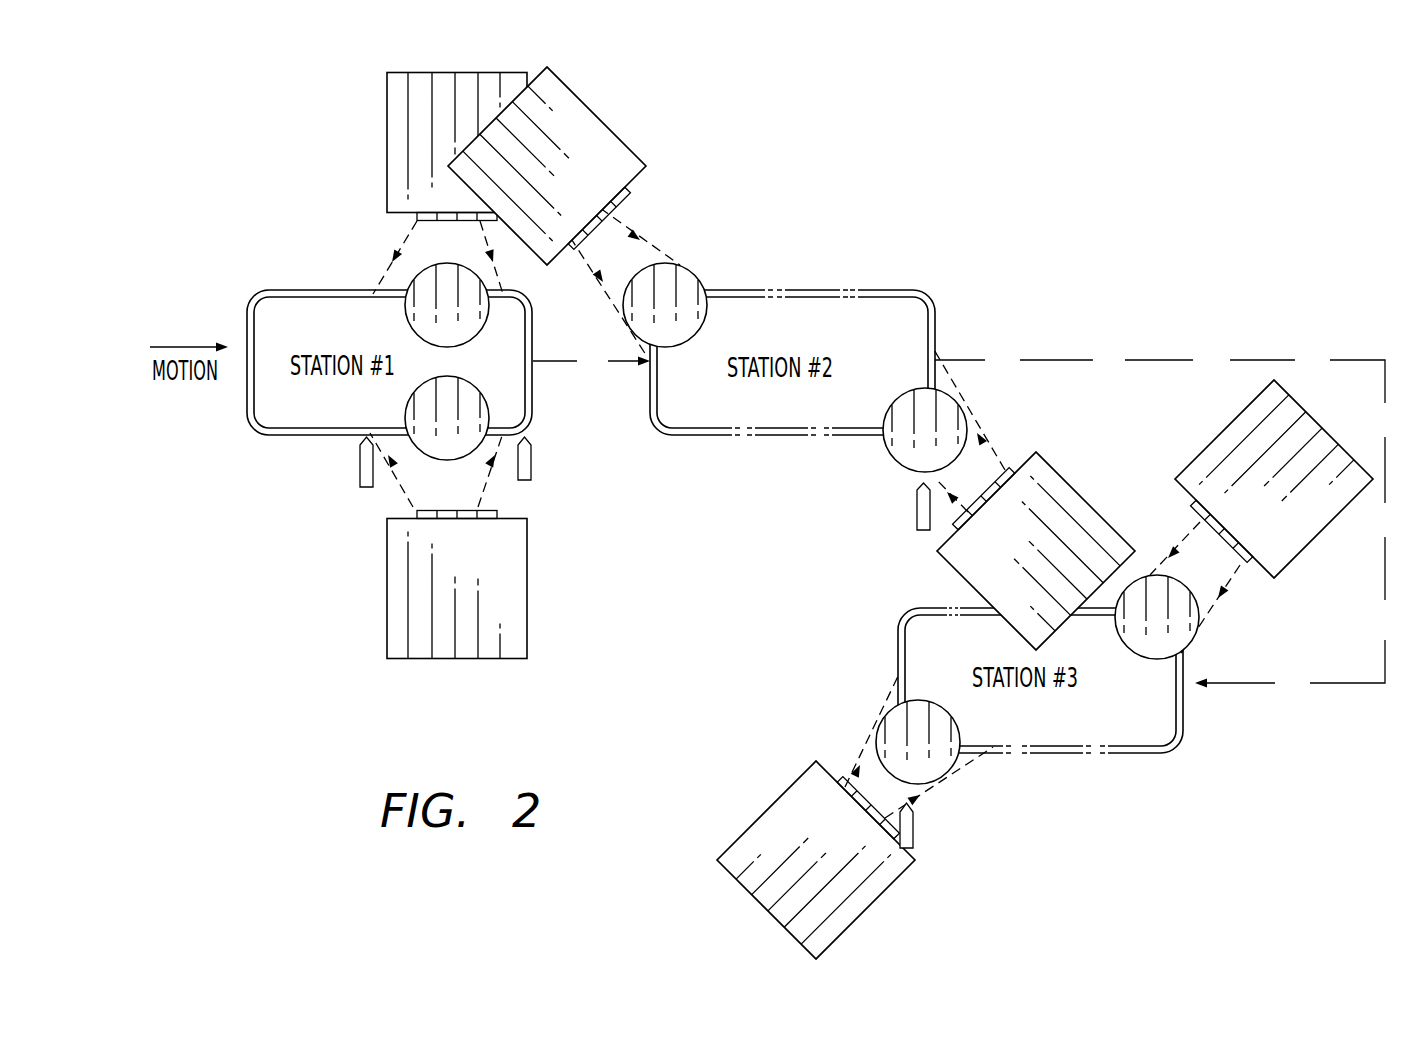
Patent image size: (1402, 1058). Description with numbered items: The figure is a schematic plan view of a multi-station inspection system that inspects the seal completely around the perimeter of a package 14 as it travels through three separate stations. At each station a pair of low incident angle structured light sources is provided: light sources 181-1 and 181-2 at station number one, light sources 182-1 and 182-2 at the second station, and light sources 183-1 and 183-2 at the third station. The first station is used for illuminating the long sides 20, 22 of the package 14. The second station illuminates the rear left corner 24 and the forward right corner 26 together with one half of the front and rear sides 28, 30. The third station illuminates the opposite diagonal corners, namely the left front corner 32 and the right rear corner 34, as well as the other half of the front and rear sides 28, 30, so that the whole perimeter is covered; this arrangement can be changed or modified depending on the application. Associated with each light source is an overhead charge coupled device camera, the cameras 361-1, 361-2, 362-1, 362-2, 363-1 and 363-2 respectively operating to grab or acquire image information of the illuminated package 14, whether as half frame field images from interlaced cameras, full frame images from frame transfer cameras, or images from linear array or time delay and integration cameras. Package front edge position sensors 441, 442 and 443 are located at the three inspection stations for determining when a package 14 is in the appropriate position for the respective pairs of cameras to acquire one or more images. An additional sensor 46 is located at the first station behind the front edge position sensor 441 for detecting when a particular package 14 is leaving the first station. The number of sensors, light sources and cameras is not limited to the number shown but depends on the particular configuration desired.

The package 14 is at (342, 311).
The long side 20 is at (309, 290).
The long side 22 is at (322, 436).
The rear left corner 24 is at (255, 298).
The forward right corner 26 is at (533, 425).
The front side 28 is at (534, 337).
The rear side 30 is at (247, 390).
The left front corner 32 is at (530, 299).
The right rear corner 34 is at (255, 433).
The structured light source 181-1 is at (387, 117).
The structured light source 181-2 is at (527, 592).
The structured light source 182-1 is at (598, 114).
The structured light source 182-2 is at (1050, 468).
The structured light source 183-1 is at (1282, 568).
The structured light source 183-2 is at (889, 886).
The overhead CCD camera 361-1 is at (444, 348).
The overhead CCD camera 361-2 is at (434, 463).
The overhead CCD camera 362-1 is at (708, 323).
The overhead CCD camera 362-2 is at (894, 404).
The overhead CCD camera 363-1 is at (1127, 647).
The overhead CCD camera 363-2 is at (957, 728).
The package front edge position sensor 441 is at (529, 464).
The package front edge position sensor 442 is at (915, 505).
The package front edge position sensor 443 is at (915, 838).
The additional sensor 46 is at (361, 477).